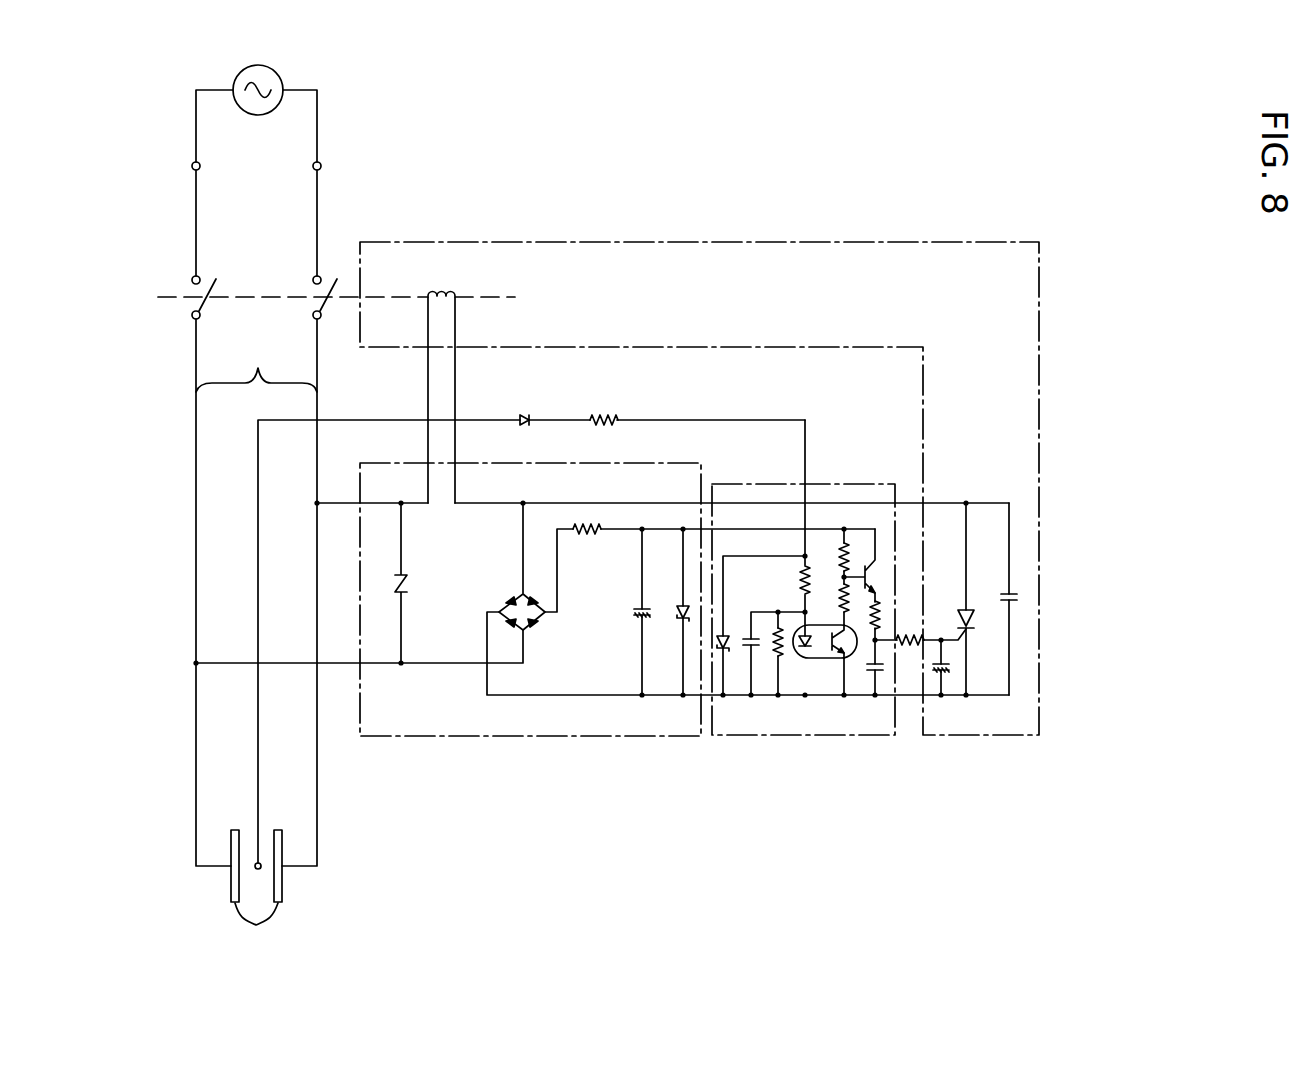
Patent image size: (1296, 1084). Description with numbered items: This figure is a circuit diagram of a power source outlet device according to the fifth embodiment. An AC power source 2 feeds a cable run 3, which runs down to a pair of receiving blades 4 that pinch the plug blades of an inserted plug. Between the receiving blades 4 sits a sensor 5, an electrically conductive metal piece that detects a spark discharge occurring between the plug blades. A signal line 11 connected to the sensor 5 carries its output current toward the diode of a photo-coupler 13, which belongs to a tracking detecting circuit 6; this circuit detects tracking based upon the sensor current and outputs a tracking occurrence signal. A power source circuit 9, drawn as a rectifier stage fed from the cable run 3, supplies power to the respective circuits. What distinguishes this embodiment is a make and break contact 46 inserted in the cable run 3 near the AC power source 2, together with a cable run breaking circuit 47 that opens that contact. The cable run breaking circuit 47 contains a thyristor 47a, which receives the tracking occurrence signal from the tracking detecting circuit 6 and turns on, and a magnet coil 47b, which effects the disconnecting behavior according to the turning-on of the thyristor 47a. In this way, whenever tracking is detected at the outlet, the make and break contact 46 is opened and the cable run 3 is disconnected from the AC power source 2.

The AC power source 2 is at (233, 83).
The make and break contact 46 is at (200, 290).
The cable run 3 is at (256, 363).
The magnet coil 47b is at (455, 292).
The signal line 11 is at (257, 560).
The power source circuit 9 is at (530, 737).
The tracking detecting circuit 6 is at (839, 623).
The photo-coupler 13 is at (823, 658).
The cable run breaking circuit 47 is at (748, 534).
The thyristor 47a is at (970, 624).
The sensor 5 is at (260, 868).
The receiving blades 4 is at (256, 891).